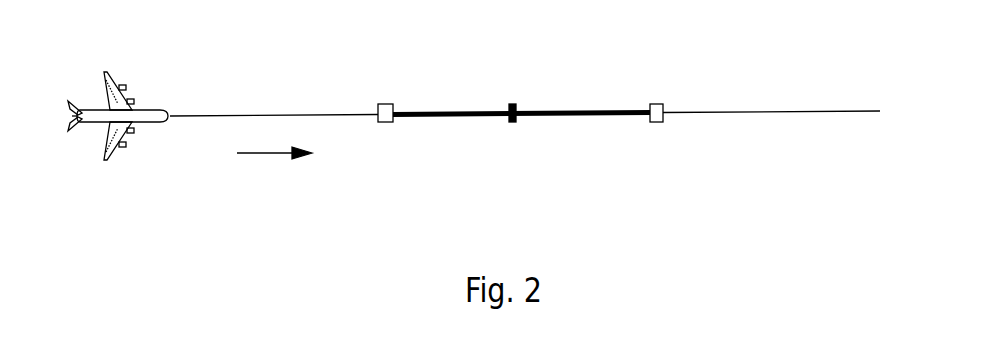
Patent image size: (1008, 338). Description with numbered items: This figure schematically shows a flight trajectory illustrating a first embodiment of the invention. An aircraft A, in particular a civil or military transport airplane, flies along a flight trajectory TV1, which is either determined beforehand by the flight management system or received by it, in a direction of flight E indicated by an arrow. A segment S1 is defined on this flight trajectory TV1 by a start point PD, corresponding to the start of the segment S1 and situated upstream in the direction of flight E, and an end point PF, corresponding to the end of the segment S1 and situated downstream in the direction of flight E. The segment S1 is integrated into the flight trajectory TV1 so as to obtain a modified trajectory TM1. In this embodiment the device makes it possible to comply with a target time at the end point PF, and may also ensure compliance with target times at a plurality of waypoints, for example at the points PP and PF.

The aircraft A is at (148, 111).
The flight trajectory TV1 is at (248, 113).
The start point PD is at (384, 104).
The waypoint PP is at (512, 104).
The end point PF is at (656, 104).
The segment S1 is at (564, 119).
The modified trajectory TM1 is at (727, 122).
The direction of flight E is at (268, 155).